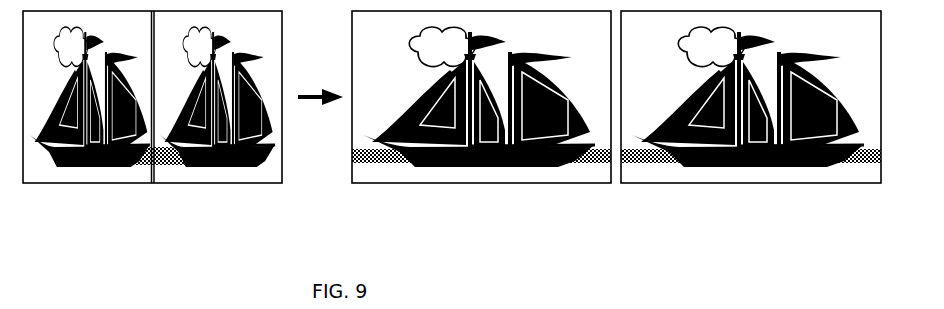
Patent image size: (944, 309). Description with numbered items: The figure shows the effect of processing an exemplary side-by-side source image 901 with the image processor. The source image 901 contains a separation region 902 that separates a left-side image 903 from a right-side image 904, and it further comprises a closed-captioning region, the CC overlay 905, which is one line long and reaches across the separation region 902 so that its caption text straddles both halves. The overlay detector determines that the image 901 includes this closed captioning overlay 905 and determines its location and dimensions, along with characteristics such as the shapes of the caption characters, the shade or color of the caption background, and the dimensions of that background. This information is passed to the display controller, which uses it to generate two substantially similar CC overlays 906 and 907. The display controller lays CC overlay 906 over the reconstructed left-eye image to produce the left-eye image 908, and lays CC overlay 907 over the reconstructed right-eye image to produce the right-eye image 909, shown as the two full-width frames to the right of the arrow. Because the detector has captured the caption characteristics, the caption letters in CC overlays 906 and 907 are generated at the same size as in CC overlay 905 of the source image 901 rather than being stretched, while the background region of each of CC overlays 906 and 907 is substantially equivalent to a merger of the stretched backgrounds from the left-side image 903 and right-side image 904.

The image 901 is at (50, 190).
The separation region 902 is at (153, 183).
The left-side image 903 is at (83, 175).
The right-side image 904 is at (205, 175).
The closed captioning overlay 905 is at (232, 168).
The CC overlay 906 is at (385, 160).
The CC overlay 907 is at (645, 160).
The left-eye image 908 is at (507, 188).
The right-eye image 909 is at (713, 187).